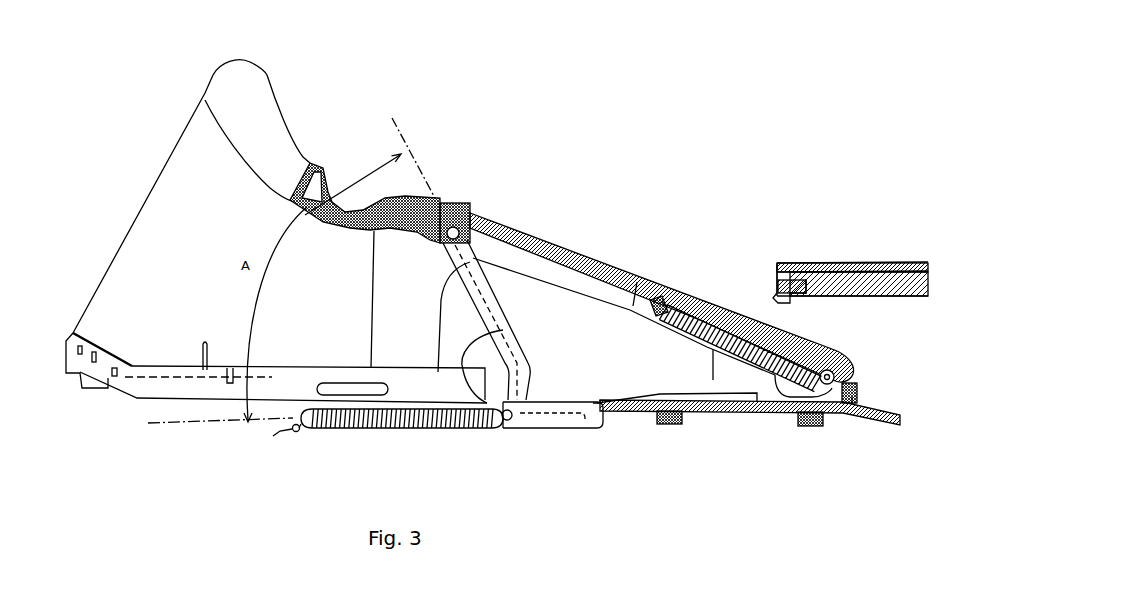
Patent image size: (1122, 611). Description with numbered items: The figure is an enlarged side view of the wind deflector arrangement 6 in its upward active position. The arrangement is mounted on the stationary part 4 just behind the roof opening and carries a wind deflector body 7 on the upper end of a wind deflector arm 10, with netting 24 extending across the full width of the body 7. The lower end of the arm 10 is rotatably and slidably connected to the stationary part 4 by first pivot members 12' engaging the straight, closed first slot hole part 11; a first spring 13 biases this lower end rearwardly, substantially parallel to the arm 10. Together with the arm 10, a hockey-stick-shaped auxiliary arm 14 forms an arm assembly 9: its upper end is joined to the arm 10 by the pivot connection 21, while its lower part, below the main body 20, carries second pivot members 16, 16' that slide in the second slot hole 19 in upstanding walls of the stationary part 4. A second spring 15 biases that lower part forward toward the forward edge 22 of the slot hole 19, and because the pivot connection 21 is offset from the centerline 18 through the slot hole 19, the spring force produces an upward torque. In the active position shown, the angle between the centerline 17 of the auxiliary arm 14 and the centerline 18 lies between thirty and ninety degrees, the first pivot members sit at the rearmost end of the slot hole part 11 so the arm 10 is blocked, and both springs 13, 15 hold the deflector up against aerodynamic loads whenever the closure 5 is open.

The stationary part 4 is at (694, 403).
The closure 5 is at (851, 262).
The wind deflector arrangement 6 is at (146, 148).
The wind deflector body 7 is at (228, 92).
The arm assembly 9 is at (486, 183).
The wind deflector arm 10 is at (663, 283).
The first slot hole part 11 is at (787, 390).
The first pivot member 12' is at (827, 377).
The first spring 13 is at (713, 350).
The auxiliary arm 14 is at (407, 430).
The second spring 15 is at (357, 433).
The second pivot member 16 is at (404, 454).
The second pivot member 16' is at (306, 418).
The centerline through the auxiliary arm 17 is at (515, 427).
The centerline through the second slot hole 18 is at (567, 412).
The second slot hole 19 is at (548, 432).
The main body 20 is at (480, 323).
The pivot connection 21 is at (478, 243).
The forward edge 22 is at (770, 283).
The netting 24 is at (126, 236).